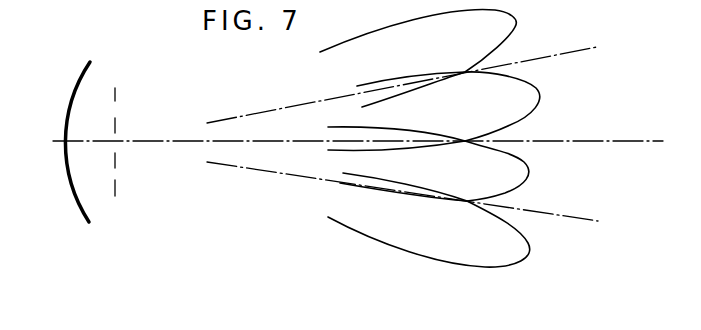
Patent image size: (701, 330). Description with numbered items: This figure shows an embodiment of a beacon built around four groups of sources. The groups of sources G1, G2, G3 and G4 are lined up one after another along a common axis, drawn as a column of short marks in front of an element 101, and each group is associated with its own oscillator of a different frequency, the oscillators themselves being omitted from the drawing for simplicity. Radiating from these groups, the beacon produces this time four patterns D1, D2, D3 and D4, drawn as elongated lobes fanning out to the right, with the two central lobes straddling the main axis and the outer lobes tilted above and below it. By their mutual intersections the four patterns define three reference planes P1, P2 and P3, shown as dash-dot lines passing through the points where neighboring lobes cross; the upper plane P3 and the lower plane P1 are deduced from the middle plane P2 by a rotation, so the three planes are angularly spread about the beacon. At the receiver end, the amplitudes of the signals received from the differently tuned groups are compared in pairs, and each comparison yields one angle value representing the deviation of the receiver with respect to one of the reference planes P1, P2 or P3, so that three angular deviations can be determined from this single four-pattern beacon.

The concave mirror 101 is at (75, 90).
The group of sources G1 is at (117, 183).
The group of sources G2 is at (117, 157).
The group of sources G3 is at (117, 125).
The group of sources G4 is at (117, 94).
The pattern D1 is at (509, 39).
The pattern D2 is at (538, 103).
The pattern D3 is at (529, 176).
The pattern D4 is at (529, 252).
The reference plane P1 is at (587, 221).
The reference plane P2 is at (628, 140).
The reference plane P3 is at (580, 48).